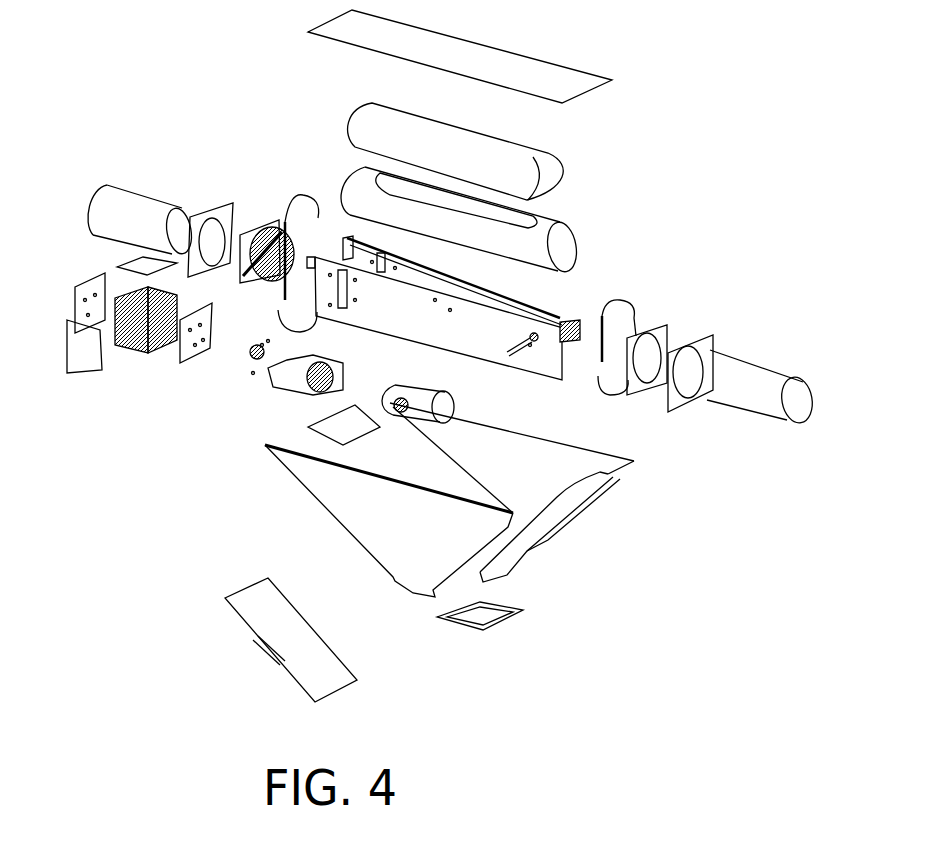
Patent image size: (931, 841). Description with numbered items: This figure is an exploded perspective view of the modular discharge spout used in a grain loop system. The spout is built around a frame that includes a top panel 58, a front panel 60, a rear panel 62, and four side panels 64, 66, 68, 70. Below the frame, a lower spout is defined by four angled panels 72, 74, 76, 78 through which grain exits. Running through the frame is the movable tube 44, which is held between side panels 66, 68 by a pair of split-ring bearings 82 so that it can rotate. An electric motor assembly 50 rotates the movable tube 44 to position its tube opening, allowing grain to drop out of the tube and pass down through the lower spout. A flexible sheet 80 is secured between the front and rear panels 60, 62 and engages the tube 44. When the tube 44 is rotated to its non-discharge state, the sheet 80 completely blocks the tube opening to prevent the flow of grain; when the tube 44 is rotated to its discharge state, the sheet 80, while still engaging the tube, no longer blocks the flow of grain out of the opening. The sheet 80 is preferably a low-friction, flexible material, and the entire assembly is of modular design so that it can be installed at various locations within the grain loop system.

The movable tube 44 is at (577, 227).
The electric motor assembly 50 is at (457, 400).
The top panel 58 is at (493, 58).
The front panel 60 is at (562, 380).
The rear panel 62 is at (587, 293).
The side panel 64 is at (203, 213).
The side panel 66 is at (254, 232).
The side panel 68 is at (667, 320).
The side panel 70 is at (710, 337).
The angled panel 72 is at (240, 593).
The angled panel 74 is at (513, 562).
The angled panel 76 is at (411, 592).
The angled panel 78 is at (617, 475).
The flexible sheet 80 is at (563, 157).
The split-ring bearings 82 is at (293, 200).